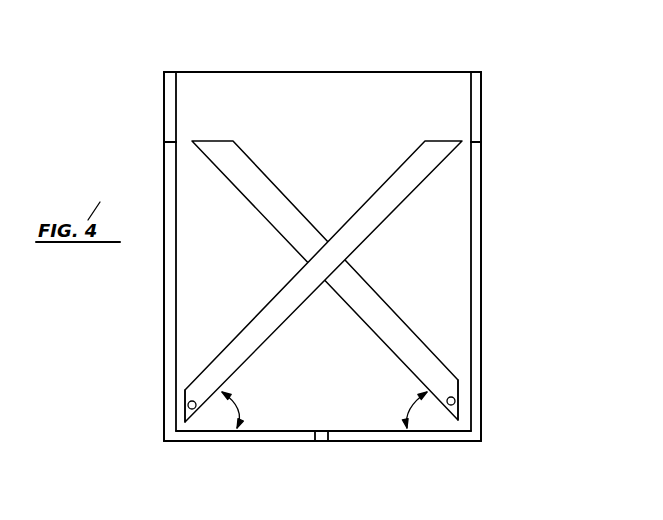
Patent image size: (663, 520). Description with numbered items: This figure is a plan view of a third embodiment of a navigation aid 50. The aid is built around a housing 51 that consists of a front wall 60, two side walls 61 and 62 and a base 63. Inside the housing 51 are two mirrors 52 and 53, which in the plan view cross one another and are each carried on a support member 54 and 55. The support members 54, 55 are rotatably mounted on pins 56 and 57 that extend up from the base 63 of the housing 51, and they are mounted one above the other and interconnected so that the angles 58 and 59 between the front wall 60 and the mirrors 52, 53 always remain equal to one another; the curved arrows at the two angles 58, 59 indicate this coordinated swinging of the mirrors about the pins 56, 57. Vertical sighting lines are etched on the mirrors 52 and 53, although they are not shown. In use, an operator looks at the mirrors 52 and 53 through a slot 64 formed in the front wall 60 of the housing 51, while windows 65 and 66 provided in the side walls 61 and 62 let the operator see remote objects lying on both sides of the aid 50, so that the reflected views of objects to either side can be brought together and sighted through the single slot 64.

The navigation aid 50 is at (492, 245).
The housing 51 is at (477, 128).
The mirror 52 is at (260, 348).
The mirror 53 is at (395, 353).
The support member 54 is at (198, 385).
The support member 55 is at (437, 375).
The pin 56 is at (188, 405).
The pin 57 is at (455, 402).
The angle 58 is at (217, 418).
The angle 59 is at (427, 416).
The front wall 60 is at (263, 437).
The side wall 61 is at (164, 113).
The side wall 62 is at (481, 92).
The base 63 is at (368, 78).
The slot 64 is at (322, 442).
The window 65 is at (164, 276).
The window 66 is at (481, 293).